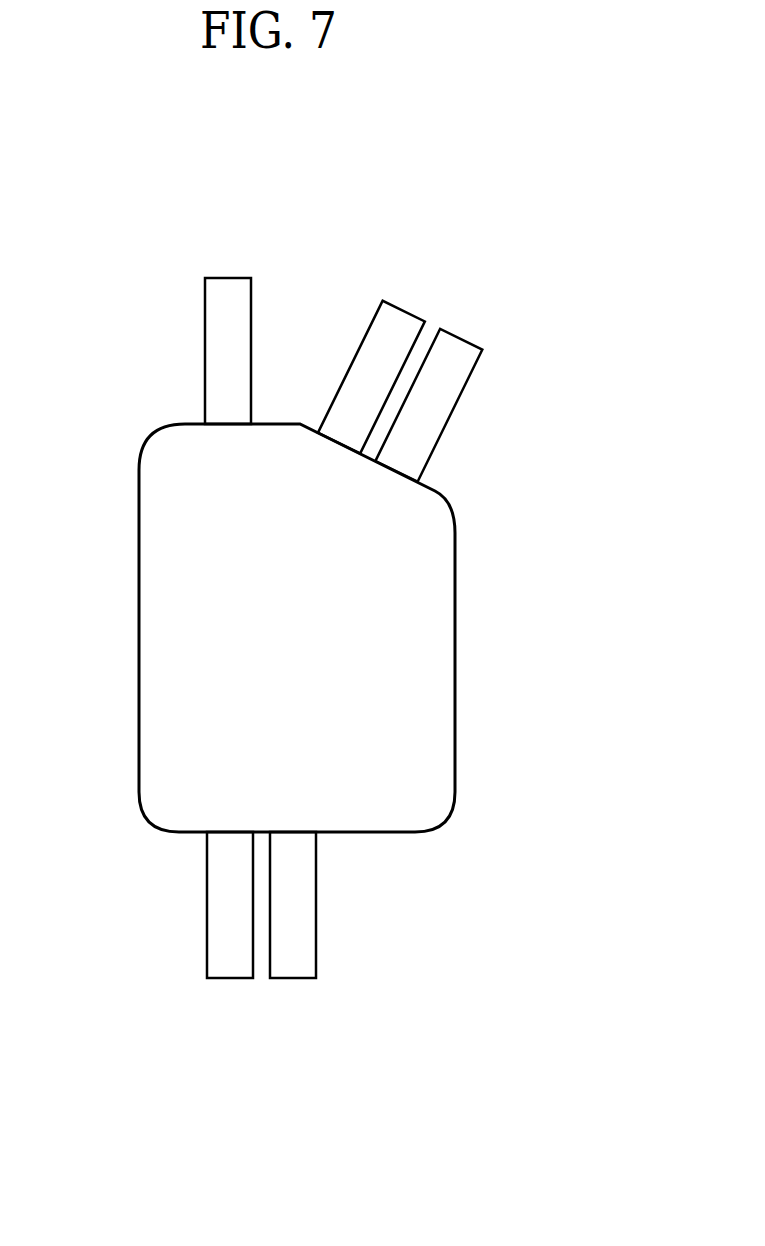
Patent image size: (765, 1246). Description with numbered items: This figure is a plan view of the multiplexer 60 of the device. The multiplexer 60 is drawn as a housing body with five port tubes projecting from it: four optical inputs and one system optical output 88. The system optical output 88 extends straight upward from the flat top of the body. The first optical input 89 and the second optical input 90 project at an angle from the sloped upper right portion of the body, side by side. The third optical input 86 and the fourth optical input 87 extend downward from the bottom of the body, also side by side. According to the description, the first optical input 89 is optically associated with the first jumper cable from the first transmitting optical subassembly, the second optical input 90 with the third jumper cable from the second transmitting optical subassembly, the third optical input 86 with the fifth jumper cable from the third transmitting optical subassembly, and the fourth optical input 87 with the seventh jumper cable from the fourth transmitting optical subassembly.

The multiplexer 60 is at (455, 588).
The third optical input 86 is at (230, 978).
The fourth optical input 87 is at (316, 953).
The system optical output 88 is at (205, 322).
The first optical input 89 is at (372, 325).
The second optical input 90 is at (465, 395).